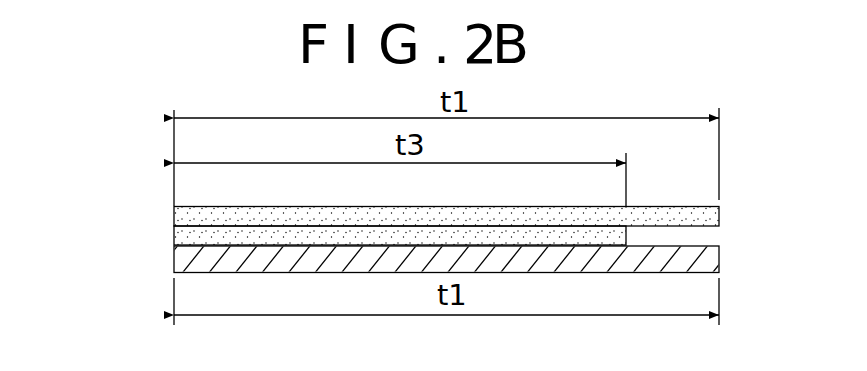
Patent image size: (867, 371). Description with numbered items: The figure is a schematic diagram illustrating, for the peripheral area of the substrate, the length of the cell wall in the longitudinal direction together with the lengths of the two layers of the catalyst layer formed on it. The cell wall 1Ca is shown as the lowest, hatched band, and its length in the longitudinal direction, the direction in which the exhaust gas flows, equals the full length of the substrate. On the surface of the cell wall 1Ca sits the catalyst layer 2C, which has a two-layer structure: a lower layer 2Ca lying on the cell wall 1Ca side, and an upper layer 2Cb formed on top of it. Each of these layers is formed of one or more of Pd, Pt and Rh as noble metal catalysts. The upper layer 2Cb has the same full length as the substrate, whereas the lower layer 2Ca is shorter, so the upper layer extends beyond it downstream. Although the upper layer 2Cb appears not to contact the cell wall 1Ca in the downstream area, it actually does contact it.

The catalyst layer 2C is at (376, 220).
The upper layer 2Cb is at (174, 217).
The lower layer 2Ca is at (174, 236).
The cell wall 1Ca is at (174, 259).